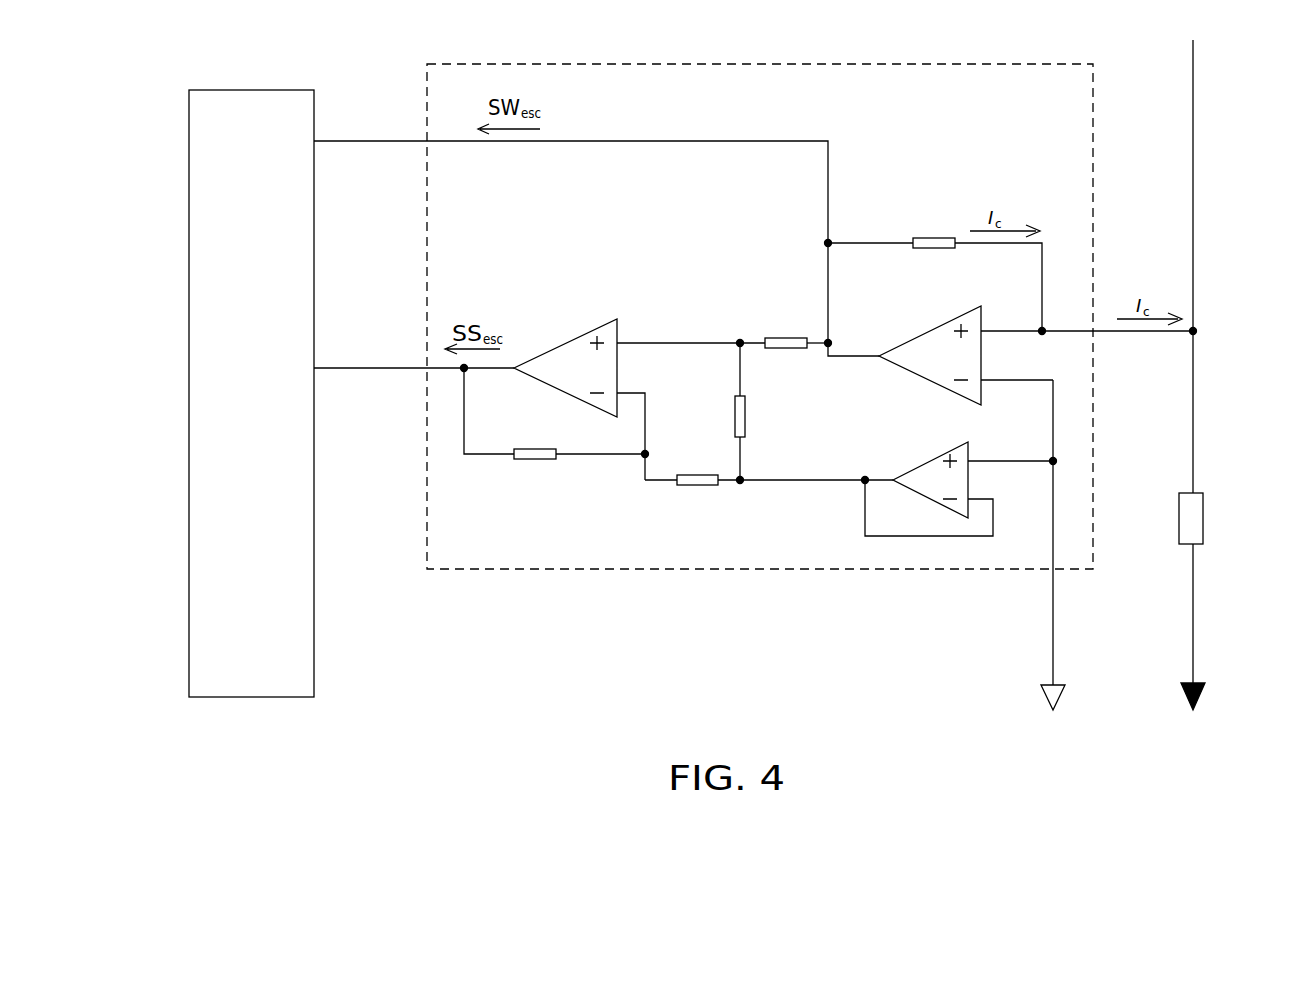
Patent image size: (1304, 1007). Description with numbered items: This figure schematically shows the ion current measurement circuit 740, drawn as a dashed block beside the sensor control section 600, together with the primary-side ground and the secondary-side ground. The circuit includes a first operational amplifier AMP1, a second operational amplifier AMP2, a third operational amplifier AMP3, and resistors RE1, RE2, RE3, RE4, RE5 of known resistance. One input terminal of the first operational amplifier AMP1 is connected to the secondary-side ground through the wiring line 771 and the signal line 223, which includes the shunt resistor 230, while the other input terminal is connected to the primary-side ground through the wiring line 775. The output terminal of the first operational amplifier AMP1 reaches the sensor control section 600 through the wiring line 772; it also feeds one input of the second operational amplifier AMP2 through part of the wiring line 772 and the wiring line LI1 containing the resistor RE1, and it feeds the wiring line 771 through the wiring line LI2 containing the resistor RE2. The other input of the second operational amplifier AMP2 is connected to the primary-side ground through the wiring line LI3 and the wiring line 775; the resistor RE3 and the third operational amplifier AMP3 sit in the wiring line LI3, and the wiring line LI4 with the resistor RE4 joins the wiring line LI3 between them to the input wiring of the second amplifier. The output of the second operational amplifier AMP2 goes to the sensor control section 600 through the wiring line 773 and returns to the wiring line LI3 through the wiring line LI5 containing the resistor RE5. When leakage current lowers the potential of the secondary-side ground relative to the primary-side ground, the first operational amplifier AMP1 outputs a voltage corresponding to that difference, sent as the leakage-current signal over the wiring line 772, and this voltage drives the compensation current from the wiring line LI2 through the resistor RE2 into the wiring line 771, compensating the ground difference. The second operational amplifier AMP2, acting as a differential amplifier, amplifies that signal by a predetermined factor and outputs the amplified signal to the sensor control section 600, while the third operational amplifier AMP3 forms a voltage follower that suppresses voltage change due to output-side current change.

The sensor control section 600 is at (265, 90).
The ion current measurement circuit 740 is at (1050, 64).
The wiring line 772 is at (384, 141).
The wiring line 773 is at (376, 368).
The wiring line 771 is at (1143, 331).
The wiring line 775 is at (1053, 646).
The signal line 223 is at (1193, 241).
The shunt resistor 230 is at (1203, 515).
The first operational amplifier AMP1 is at (940, 322).
The second operational amplifier AMP2 is at (588, 333).
The third operational amplifier AMP3 is at (940, 452).
The resistor RE1 is at (782, 338).
The resistor RE2 is at (932, 238).
The resistor RE3 is at (694, 475).
The resistor RE4 is at (746, 416).
The resistor RE5 is at (531, 459).
The wiring line LI1 is at (672, 343).
The wiring line LI2 is at (874, 243).
The wiring line LI3 is at (792, 480).
The wiring line LI4 is at (740, 374).
The wiring line LI5 is at (599, 454).